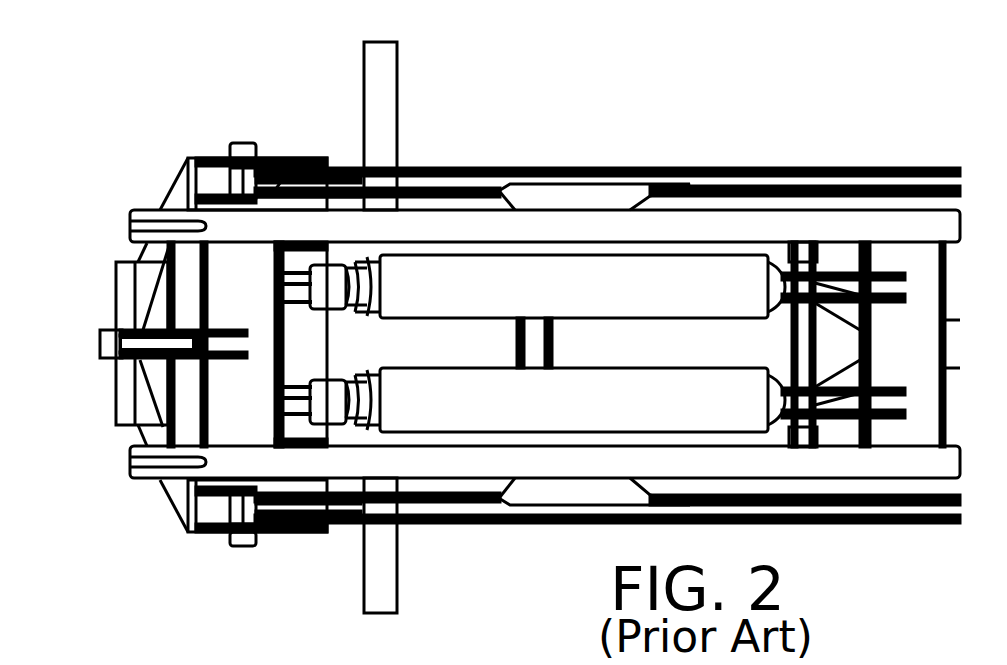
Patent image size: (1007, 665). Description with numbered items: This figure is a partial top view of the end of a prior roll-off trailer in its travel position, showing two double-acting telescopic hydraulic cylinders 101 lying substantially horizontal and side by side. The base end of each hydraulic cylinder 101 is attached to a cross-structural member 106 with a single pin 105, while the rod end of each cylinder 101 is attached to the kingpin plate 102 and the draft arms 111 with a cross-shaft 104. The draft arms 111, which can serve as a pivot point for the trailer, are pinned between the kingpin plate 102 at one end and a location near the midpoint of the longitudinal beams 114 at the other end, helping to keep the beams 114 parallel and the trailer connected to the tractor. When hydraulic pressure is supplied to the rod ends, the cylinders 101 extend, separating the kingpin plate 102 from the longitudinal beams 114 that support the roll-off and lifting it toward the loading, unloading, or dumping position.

The hydraulic cylinder 101 is at (422, 290).
The kingpin plate 102 is at (135, 322).
The cross-shaft 104 is at (248, 142).
The single pin 105 is at (800, 260).
The cross-structural member 106 is at (918, 275).
The draft arm 111 is at (467, 173).
The longitudinal beam 114 is at (437, 464).